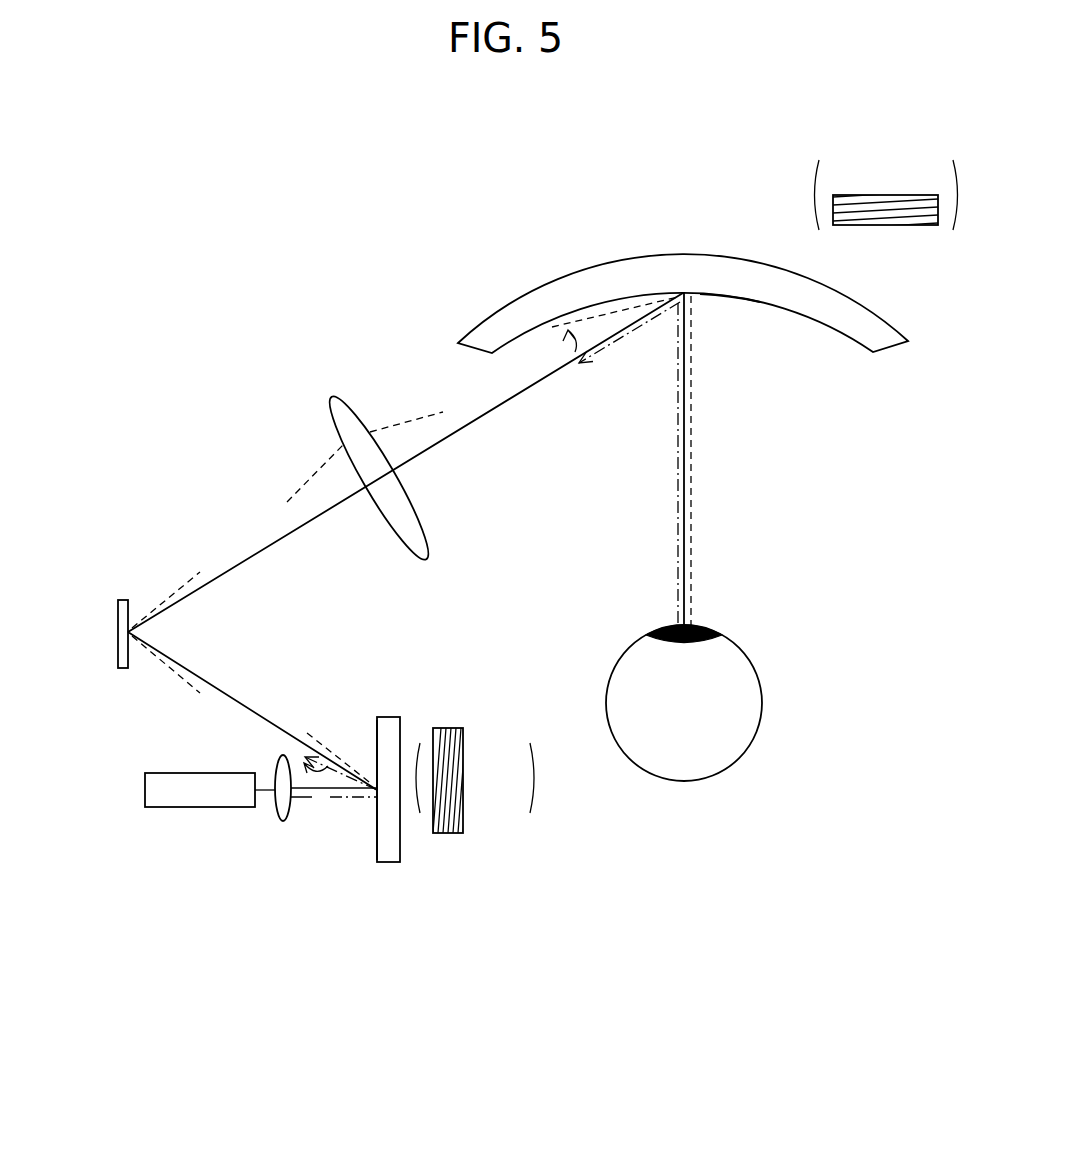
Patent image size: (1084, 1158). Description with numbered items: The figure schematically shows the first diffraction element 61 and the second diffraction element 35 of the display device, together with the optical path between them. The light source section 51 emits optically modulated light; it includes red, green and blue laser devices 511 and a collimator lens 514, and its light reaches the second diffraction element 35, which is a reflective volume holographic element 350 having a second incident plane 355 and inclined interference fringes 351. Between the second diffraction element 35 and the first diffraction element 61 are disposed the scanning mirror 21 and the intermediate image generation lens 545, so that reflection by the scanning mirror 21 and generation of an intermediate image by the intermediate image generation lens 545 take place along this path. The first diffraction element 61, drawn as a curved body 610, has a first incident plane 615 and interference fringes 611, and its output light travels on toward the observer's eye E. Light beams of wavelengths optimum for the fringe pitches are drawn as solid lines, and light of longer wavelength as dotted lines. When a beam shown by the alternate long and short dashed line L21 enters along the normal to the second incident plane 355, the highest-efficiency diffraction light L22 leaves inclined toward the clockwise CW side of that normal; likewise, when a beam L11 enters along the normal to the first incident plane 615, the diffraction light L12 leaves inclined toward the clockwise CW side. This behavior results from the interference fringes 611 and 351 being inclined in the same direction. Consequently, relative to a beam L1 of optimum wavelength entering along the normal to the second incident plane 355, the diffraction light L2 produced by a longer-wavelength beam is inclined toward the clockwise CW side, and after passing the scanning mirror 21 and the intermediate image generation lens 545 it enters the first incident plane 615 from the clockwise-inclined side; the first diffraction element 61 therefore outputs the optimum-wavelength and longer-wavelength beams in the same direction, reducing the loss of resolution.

The scanning mirror 21 is at (117, 627).
The intermediate image generation lens 545 is at (390, 530).
The first diffraction element 61 is at (698, 333).
The first diffraction element body 610 is at (798, 283).
The interference fringes 611 is at (887, 220).
The first incident plane 615 is at (737, 300).
The second diffraction element 35 is at (443, 775).
The reflective volume holographic element 350 is at (402, 727).
The interference fringes 351 is at (455, 797).
The second incident plane 355 is at (380, 807).
The light source section 51 is at (186, 860).
The laser device 511 is at (145, 793).
The collimator lens 514 is at (252, 839).
The eye of observer E is at (762, 712).
The light beam of optimum wavelength L1 is at (540, 383).
The diffraction light of longer wavelength L2 is at (583, 306).
The light beam incident on first incident plane L11 is at (677, 478).
The diffraction light of first diffraction element L12 is at (612, 350).
The light beam incident on second incident plane L21 is at (312, 797).
The diffraction light of second diffraction element L22 is at (292, 747).
The clockwise side CW is at (440, 551).